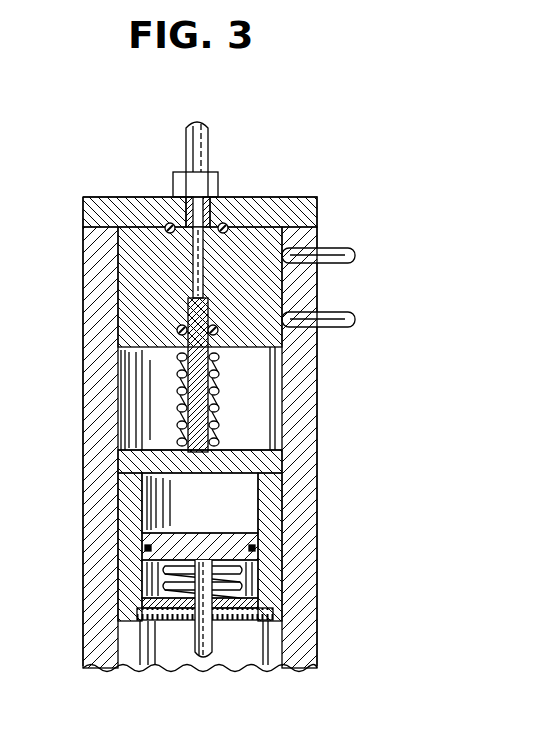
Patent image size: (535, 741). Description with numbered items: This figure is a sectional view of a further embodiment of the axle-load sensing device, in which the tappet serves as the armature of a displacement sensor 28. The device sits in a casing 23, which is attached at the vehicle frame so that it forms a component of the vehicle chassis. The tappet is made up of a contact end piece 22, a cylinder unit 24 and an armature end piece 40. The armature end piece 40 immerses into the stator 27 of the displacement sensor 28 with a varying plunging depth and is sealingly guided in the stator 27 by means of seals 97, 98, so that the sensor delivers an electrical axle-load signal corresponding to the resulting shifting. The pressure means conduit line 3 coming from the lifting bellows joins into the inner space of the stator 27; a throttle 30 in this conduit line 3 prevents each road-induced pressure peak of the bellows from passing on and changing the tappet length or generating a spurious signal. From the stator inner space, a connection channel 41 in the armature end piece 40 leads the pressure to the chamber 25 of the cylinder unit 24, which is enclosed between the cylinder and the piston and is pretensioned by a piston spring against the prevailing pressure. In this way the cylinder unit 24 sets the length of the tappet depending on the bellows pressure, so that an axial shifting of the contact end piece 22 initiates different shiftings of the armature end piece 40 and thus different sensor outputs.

The pressure means conduit line 3 is at (187, 142).
The contact end piece 22 is at (198, 640).
The casing 23 is at (298, 607).
The cylinder unit 24 is at (116, 492).
The chamber 25 is at (248, 506).
The stator 27 is at (135, 253).
The displacement sensor 28 is at (345, 233).
The throttle 30 is at (218, 195).
The armature end piece 40 is at (186, 368).
The connection channel 41 is at (221, 399).
The seal 97 is at (215, 330).
The seal 98 is at (230, 224).